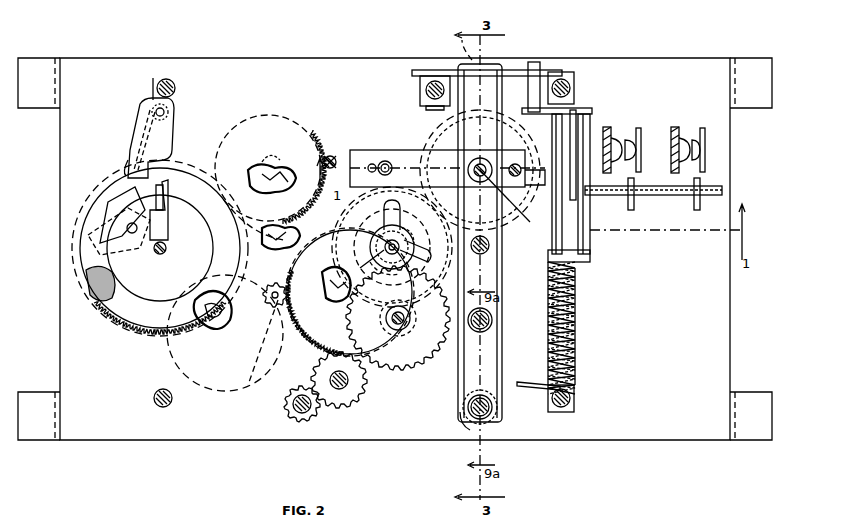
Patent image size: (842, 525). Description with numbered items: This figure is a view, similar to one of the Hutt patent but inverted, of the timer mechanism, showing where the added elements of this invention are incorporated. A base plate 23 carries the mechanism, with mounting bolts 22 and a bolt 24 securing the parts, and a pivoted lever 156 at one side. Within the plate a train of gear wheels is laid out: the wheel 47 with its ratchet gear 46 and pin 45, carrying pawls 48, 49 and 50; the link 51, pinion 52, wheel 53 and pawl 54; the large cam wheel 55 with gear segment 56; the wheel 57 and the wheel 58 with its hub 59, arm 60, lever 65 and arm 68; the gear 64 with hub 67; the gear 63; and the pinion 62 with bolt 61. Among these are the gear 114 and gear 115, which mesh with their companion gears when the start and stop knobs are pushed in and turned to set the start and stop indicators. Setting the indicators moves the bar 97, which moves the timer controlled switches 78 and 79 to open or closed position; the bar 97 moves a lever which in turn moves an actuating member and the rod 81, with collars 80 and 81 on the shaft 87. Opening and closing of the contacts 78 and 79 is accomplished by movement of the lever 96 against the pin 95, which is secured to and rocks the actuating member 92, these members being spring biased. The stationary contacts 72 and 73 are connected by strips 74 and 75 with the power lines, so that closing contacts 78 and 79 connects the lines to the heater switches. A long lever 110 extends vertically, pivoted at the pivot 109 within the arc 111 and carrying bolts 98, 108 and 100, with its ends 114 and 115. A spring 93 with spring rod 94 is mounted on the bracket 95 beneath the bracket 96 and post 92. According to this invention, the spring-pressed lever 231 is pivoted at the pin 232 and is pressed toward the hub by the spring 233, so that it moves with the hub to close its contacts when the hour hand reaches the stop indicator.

The mounting bolt 22 is at (420, 90).
The base plate 23 is at (72, 355).
The bolt 24 is at (153, 399).
The pin 45 is at (334, 156).
The ratchet gear 46 is at (332, 148).
The wheel 47 is at (250, 116).
The pawl 48 is at (286, 170).
The pawl 49 is at (258, 176).
The pawl 50 is at (300, 238).
The link 51 is at (282, 366).
The pinion 52 is at (274, 310).
The wheel 53 is at (236, 382).
The pawl 54 is at (215, 330).
The cam wheel 55 is at (150, 340).
The gear segment 56 is at (315, 352).
The wheel 57 is at (350, 300).
The wheel 58 is at (398, 204).
The hub 59 is at (385, 245).
The arm 60 is at (418, 258).
The bolt 61 is at (310, 424).
The pinion 62 is at (298, 424).
The gear 63 is at (340, 410).
The gear 64 is at (402, 372).
The lever 65 is at (380, 230).
The hub 67 is at (406, 336).
The arm 68 is at (418, 224).
The stationary contact 72 is at (608, 126).
The stationary contact 73 is at (676, 126).
The strip 74 is at (606, 150).
The strip 75 is at (674, 150).
The timer controlled switch 78 is at (632, 126).
The timer controlled switch 79 is at (698, 126).
The collar 80 is at (630, 204).
The rod 81 is at (696, 206).
The shaft 87 is at (722, 186).
The actuating member 92 is at (578, 112).
The spring 93 is at (576, 302).
The spring rod 94 is at (576, 340).
The pin 95 is at (540, 66).
The lever 96 is at (416, 70).
The bar 97 is at (516, 386).
The bolt 98 is at (490, 248).
The pivot bolt 100 is at (492, 412).
The bolt 108 is at (492, 324).
The pivot 109 is at (507, 198).
The lever 110 is at (456, 376).
The arc 111 is at (442, 128).
The gear 114 is at (470, 430).
The gear 115 is at (462, 52).
The lever 156 is at (152, 80).
The spring-pressed lever 231 is at (410, 160).
The pin 232 is at (518, 166).
The spring 233 is at (385, 160).